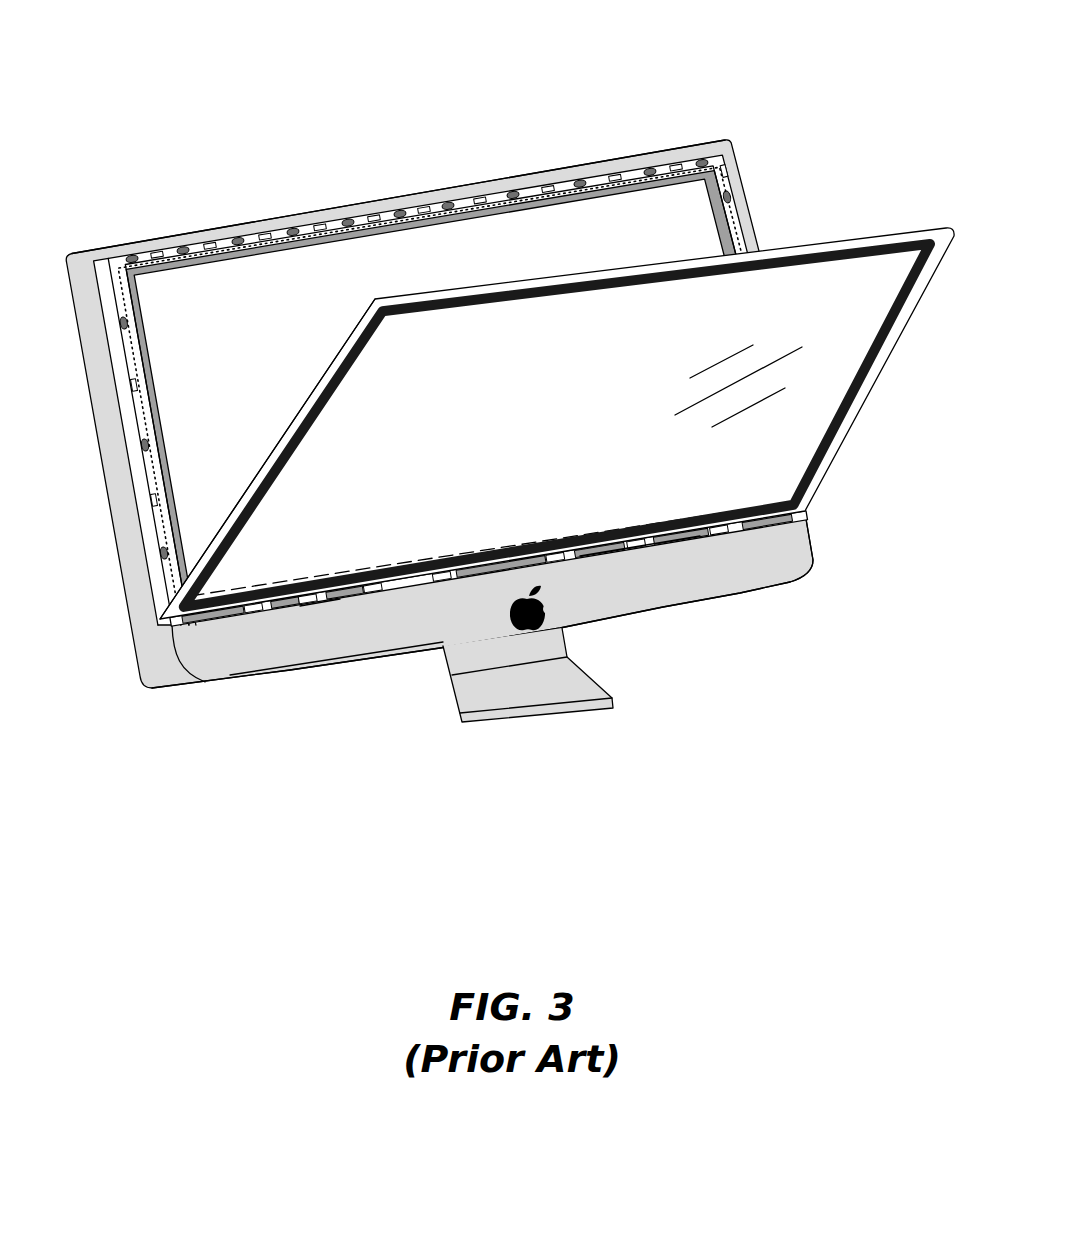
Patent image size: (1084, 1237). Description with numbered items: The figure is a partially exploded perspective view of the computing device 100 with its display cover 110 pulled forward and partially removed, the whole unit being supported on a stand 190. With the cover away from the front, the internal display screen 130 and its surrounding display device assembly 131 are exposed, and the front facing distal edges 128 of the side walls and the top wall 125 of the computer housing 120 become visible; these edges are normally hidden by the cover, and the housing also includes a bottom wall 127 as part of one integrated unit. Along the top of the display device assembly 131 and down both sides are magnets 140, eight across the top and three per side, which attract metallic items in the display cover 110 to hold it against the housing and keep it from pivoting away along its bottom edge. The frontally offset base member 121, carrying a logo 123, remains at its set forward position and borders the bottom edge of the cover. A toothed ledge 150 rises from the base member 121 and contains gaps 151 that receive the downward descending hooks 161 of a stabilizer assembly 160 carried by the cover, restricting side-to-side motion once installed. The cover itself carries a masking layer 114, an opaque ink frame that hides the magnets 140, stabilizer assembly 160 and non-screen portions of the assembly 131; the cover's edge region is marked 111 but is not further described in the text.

The computing device 100 is at (510, 411).
The display cover 110 is at (530, 452).
The cover glass edge 111 is at (275, 436).
The masking layer 114 is at (813, 251).
The computer housing 120 is at (145, 650).
The base member 121 is at (574, 597).
The logo 123 is at (530, 612).
The top wall 125 is at (372, 201).
The bottom wall 127 is at (167, 693).
The front facing distal edges 128 is at (522, 179).
The display screen 130 is at (530, 257).
The display device assembly 131 is at (597, 190).
The magnets 140 is at (283, 228).
The toothed ledge 150 is at (641, 545).
The gaps 151 is at (321, 624).
The stabilizer assembly 160 is at (240, 614).
The hooks 161 is at (308, 603).
The stand 190 is at (504, 694).